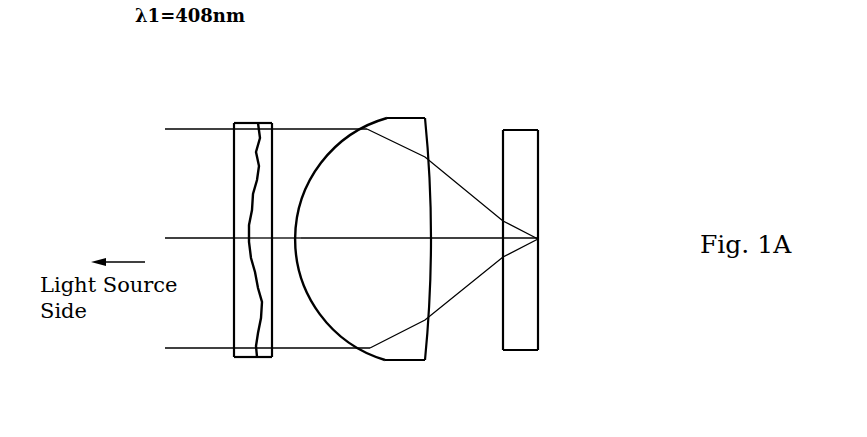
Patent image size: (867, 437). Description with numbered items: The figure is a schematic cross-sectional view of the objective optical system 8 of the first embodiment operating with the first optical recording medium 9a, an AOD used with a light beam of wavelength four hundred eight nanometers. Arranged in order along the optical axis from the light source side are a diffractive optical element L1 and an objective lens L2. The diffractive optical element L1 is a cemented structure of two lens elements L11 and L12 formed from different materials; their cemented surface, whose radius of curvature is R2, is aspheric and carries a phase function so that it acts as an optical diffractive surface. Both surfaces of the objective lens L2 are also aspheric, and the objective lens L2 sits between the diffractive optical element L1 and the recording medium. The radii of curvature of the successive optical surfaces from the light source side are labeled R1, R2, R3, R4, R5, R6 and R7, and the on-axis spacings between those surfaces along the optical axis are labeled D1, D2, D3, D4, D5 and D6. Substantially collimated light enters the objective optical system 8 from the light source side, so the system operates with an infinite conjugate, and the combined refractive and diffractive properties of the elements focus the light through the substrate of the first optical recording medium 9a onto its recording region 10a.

The diffractive optical element L1 is at (250, 219).
The first lens element L11 is at (223, 240).
The second lens element L12 is at (287, 240).
The objective lens L2 is at (379, 237).
The objective optical system 8 is at (379, 220).
The first optical recording medium 9a is at (531, 229).
The recording region 10a is at (531, 254).
The first on-axis surface spacing D1 is at (240, 238).
The second on-axis surface spacing D2 is at (263, 238).
The third on-axis surface spacing D3 is at (288, 238).
The fourth on-axis surface spacing D4 is at (360, 238).
The fifth on-axis surface spacing D5 is at (450, 238).
The sixth on-axis surface spacing D6 is at (520, 238).
The first surface radius of curvature R1 is at (226, 349).
The second surface radius of curvature R2 is at (254, 348).
The third surface radius of curvature R3 is at (276, 348).
The fourth surface radius of curvature R4 is at (361, 347).
The fifth surface radius of curvature R5 is at (428, 350).
The sixth surface radius of curvature R6 is at (503, 321).
The seventh surface radius of curvature R7 is at (538, 321).